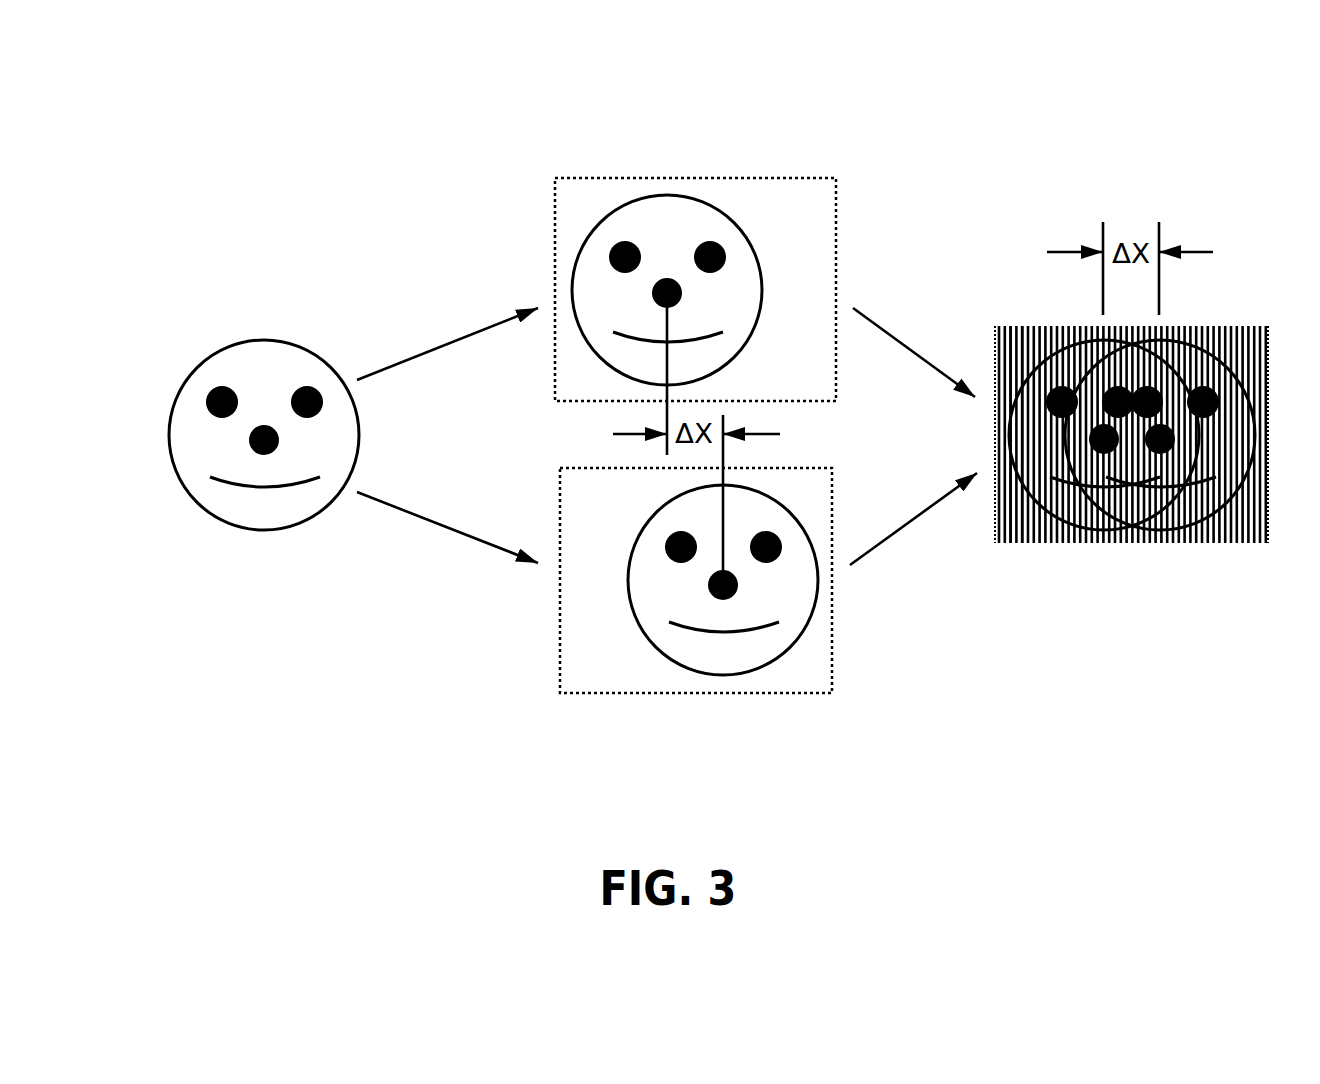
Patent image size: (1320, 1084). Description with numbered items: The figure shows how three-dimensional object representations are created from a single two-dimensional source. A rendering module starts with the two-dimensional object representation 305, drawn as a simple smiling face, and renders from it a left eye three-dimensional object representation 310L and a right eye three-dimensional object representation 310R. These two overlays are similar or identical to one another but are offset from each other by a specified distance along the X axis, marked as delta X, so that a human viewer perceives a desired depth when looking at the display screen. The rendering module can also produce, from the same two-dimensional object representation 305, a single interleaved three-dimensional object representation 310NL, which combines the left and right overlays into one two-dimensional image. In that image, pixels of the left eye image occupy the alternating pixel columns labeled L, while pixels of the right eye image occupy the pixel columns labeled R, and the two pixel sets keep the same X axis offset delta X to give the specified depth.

The 2D object representation 305 is at (176, 431).
The left eye 3D object representation 310L is at (557, 226).
The right eye 3D object representation 310R is at (561, 652).
The interleaved 3D object representation 310NL is at (993, 433).
The right eye pixel column R is at (1023, 326).
The left eye pixel column L is at (1012, 326).